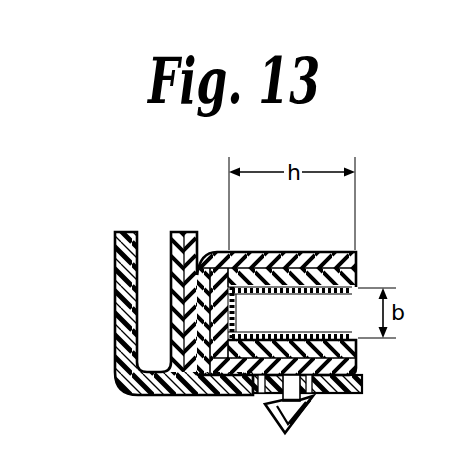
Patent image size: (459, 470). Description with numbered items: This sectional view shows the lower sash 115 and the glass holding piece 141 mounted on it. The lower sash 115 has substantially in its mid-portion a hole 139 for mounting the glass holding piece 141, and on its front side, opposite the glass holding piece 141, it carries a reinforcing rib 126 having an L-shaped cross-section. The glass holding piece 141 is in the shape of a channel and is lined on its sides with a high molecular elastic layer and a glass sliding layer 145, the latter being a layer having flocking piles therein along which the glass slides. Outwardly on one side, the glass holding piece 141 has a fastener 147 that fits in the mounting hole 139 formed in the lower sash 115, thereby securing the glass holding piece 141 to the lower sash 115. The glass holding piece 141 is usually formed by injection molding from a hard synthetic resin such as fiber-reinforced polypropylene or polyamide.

The lower sash 115 is at (197, 387).
The reinforcing rib 126 is at (118, 292).
The hole 139 is at (318, 390).
The glass holding piece 141 is at (313, 246).
The glass sliding layer 145 is at (252, 334).
The fastener 147 is at (307, 415).